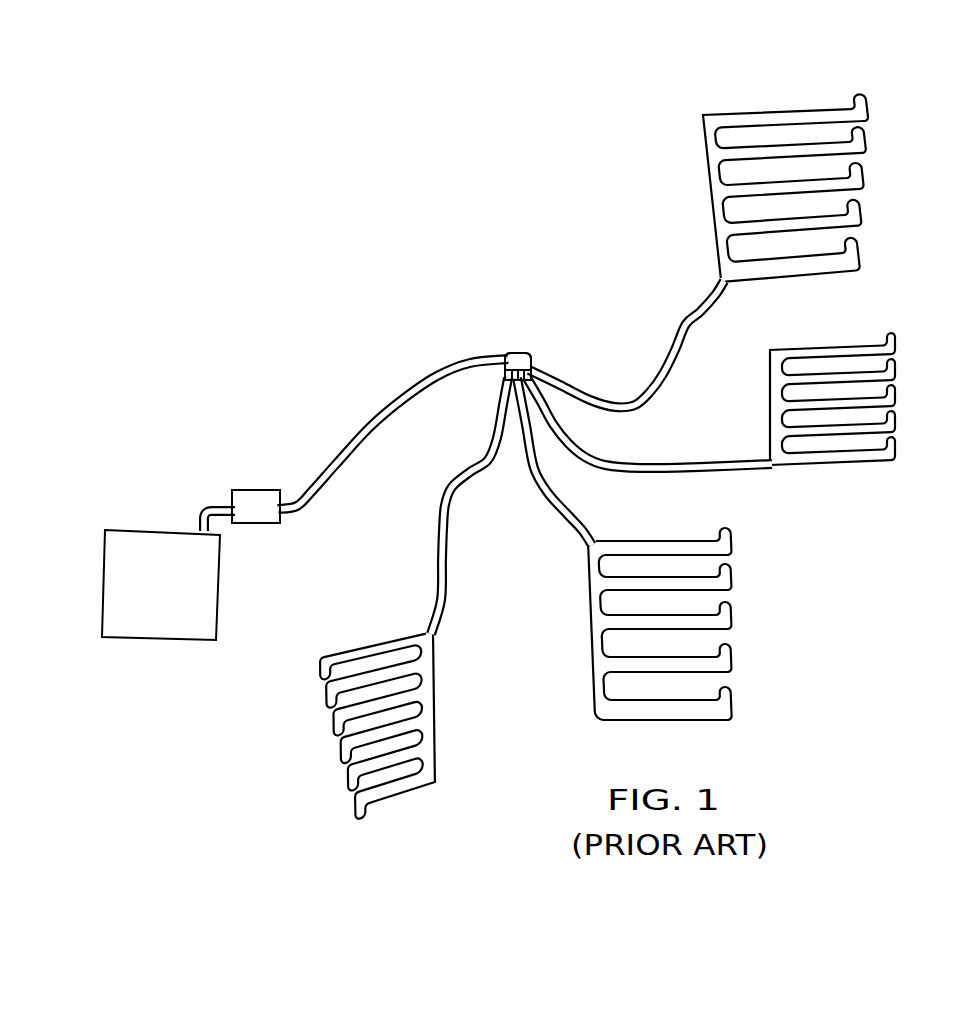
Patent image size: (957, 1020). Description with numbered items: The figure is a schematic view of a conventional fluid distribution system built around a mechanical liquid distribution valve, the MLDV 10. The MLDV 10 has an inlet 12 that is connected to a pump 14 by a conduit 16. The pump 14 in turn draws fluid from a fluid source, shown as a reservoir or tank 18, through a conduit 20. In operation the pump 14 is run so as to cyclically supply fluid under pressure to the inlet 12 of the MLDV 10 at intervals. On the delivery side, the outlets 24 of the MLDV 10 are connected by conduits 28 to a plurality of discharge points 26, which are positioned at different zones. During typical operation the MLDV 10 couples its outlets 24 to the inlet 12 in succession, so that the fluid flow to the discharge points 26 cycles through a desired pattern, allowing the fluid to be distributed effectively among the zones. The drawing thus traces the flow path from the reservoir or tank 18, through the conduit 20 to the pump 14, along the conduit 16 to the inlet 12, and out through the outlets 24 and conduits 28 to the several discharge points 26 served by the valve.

The MLDV 10 is at (539, 329).
The inlet 12 is at (504, 324).
The pump 14 is at (269, 473).
The conduit 16 is at (393, 434).
The reservoir or tank 18 is at (158, 544).
The conduit 20 is at (243, 544).
The outlets 24 is at (521, 374).
The discharge points 26 is at (628, 430).
The conduits 28 is at (601, 457).